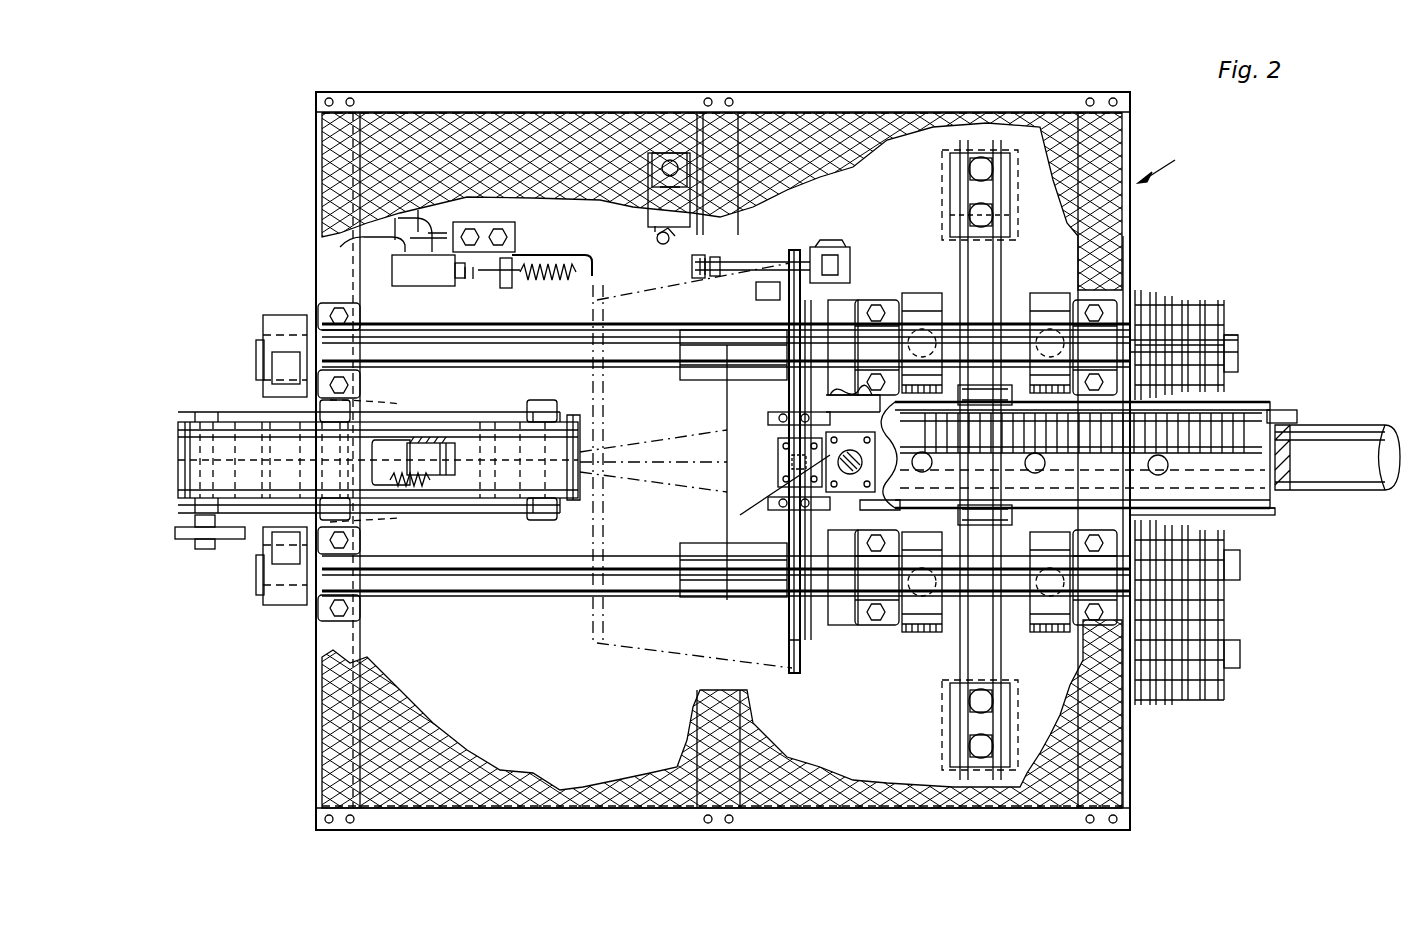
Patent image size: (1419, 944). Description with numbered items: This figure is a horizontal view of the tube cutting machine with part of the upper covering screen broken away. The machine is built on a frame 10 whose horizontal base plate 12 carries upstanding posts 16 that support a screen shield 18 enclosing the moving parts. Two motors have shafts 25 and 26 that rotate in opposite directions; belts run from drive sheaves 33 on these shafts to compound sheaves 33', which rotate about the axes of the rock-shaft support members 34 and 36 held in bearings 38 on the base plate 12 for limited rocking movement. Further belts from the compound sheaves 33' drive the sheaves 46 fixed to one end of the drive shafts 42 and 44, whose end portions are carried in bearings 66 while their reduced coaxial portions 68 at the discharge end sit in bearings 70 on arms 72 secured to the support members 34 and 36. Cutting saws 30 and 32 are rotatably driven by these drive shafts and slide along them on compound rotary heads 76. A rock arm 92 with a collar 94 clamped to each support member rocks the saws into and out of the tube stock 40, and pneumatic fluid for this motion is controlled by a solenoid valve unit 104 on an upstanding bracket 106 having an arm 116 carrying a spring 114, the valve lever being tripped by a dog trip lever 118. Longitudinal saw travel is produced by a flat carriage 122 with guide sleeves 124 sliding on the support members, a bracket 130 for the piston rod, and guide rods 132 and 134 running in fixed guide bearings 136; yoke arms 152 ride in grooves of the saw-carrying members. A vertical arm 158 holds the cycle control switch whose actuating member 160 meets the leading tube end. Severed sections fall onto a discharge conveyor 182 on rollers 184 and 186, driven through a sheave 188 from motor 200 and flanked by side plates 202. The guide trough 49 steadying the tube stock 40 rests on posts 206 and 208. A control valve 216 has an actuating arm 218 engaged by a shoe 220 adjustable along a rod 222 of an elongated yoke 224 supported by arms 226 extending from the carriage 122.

The frame 10 is at (1181, 164).
The base plate 12 is at (452, 681).
The posts 16 is at (338, 92).
The screen shield 18 is at (845, 115).
The motor shaft 25 is at (1240, 652).
The motor shaft 26 is at (1261, 322).
The cutting saw 30 is at (600, 636).
The cutting saw 32 is at (805, 250).
The drive sheaves 33 is at (1199, 697).
The compound sheaves 33' is at (1215, 448).
The support member 34 is at (440, 560).
The support member 36 is at (470, 328).
The bearings 38 is at (320, 305).
The tube stock 40 is at (1385, 490).
The drive shaft 42 is at (608, 310).
The drive shaft 44 is at (500, 600).
The drive sheaves 46 is at (1155, 292).
The guide trough 49 is at (1275, 508).
The bearings 66 is at (915, 293).
The reduced coaxial portion 68 is at (258, 345).
The bearing 70 is at (265, 320).
The arms 72 is at (272, 368).
The rotary head 76 is at (842, 300).
The rock arm 92 is at (1002, 268).
The collars 94 is at (985, 385).
The valve unit 104 is at (428, 270).
The bracket 106 is at (487, 252).
The spring 114 is at (535, 278).
The arm 116 is at (535, 255).
The dog trip lever 118 is at (742, 262).
The carriage 122 is at (768, 503).
The guide sleeves 124 is at (738, 370).
The bracket 130 is at (850, 492).
The guide rod 132 is at (778, 462).
The guide rod 134 is at (768, 418).
The guide bearings 136 is at (1035, 515).
The yoke arms 152 is at (797, 250).
The vertical arm 158 is at (445, 443).
The actuating member 160 is at (415, 486).
The discharge conveyor 182 is at (385, 455).
The roller 184 is at (653, 472).
The roller 186 is at (180, 460).
The sheave 188 is at (175, 532).
The motor 200 is at (380, 522).
The side plates 202 is at (350, 412).
The post 206 is at (1190, 462).
The post 208 is at (760, 510).
The control valve 216 is at (650, 225).
The actuating arm 218 is at (672, 235).
The shoe 220 is at (832, 247).
The rod 222 is at (768, 300).
The yoke 224 is at (698, 278).
The arms 226 is at (716, 278).